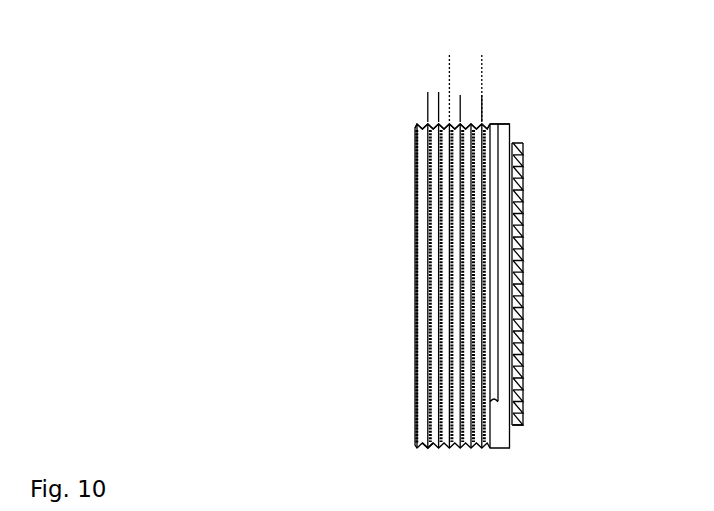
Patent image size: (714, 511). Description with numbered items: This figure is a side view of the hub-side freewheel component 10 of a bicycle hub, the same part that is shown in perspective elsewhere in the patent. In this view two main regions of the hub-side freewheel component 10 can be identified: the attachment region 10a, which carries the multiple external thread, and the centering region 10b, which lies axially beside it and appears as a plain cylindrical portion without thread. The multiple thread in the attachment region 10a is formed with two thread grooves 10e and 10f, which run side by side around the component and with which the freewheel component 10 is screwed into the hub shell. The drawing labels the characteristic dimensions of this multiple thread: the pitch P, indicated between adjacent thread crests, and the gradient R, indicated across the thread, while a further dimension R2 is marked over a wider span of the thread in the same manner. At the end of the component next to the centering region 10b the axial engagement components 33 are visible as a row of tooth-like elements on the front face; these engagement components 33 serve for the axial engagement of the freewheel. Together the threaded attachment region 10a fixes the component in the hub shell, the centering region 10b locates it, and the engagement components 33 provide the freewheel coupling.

The hub-side freewheel component 10 is at (404, 130).
The attachment region 10a is at (417, 94).
The centering region 10b is at (501, 121).
The thread groove 10e is at (429, 445).
The thread groove 10f is at (431, 445).
The axial engagement components 33 is at (524, 156).
The pitch P is at (452, 103).
The gradient R is at (490, 103).
The radius R2 is at (481, 65).